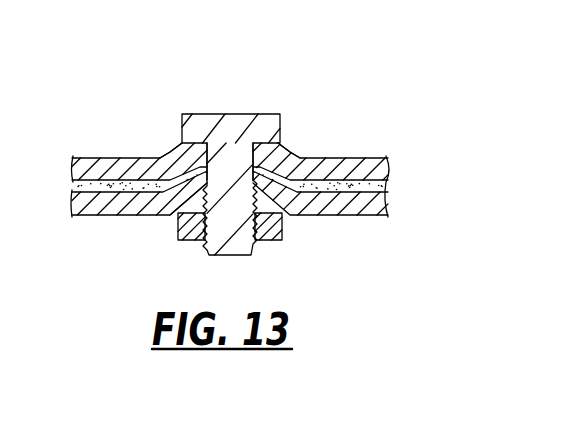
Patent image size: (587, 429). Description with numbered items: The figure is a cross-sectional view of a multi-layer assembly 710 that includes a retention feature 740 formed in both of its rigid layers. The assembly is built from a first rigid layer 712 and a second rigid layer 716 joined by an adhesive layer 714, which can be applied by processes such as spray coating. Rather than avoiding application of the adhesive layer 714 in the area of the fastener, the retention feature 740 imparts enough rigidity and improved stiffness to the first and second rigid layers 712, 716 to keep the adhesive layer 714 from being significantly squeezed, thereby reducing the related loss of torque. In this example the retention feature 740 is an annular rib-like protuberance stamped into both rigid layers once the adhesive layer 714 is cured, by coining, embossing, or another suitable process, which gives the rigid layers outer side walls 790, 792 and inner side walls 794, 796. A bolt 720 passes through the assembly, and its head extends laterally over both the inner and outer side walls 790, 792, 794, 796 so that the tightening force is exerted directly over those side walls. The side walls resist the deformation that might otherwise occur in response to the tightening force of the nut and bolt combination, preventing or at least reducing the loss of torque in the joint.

The multi-layer assembly 710 is at (352, 150).
The first rigid layer 712 is at (136, 206).
The adhesive layer 714 is at (90, 171).
The second rigid layer 716 is at (104, 169).
The bolt 720 is at (229, 164).
The retention feature 740 is at (297, 150).
The outer side wall 790 is at (175, 199).
The outer side wall 792 is at (167, 171).
The inner side wall 794 is at (195, 168).
The inner side wall 796 is at (196, 201).